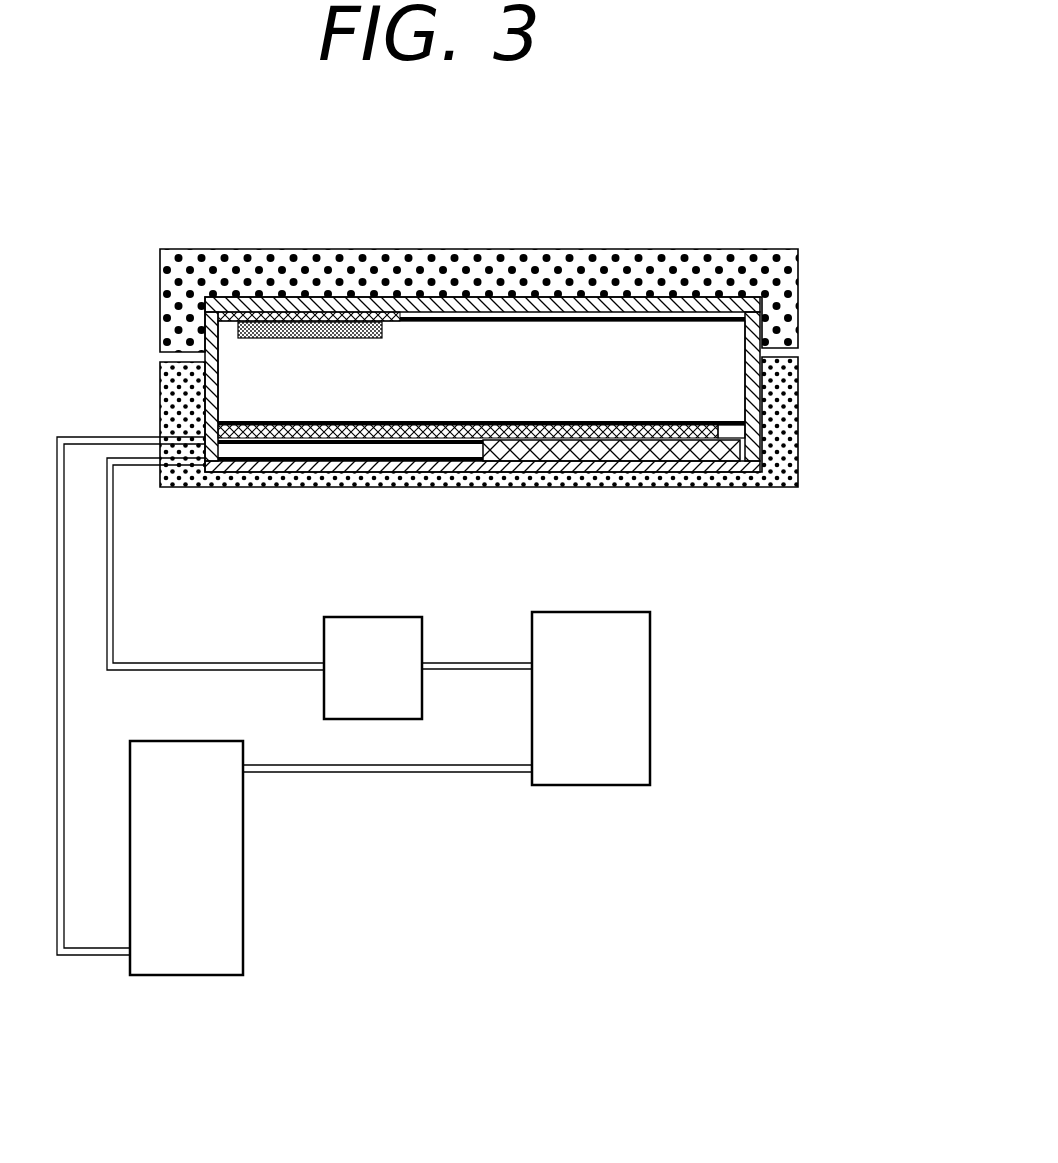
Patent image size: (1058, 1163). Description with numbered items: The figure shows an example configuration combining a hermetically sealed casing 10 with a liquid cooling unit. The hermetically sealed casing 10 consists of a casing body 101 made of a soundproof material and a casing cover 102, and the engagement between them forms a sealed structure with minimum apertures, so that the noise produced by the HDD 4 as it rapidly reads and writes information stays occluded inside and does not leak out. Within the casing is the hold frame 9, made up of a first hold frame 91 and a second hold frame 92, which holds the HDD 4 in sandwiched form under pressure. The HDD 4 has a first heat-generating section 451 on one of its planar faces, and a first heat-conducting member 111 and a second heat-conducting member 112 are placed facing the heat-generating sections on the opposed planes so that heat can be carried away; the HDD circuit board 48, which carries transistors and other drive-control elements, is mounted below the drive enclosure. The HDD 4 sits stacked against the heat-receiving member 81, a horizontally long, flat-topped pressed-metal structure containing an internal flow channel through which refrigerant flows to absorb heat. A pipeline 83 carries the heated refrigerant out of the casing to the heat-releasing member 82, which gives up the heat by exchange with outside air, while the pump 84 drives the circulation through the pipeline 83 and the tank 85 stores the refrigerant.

The HDD 4 is at (605, 333).
The hold frame 9 is at (488, 296).
The hermetically sealed casing 10 is at (270, 272).
The HDD circuit board 48 is at (203, 325).
The heat-receiving member 81 is at (528, 448).
The heat-releasing member 82 is at (200, 890).
The pipeline 83 is at (412, 772).
The pump 84 is at (367, 657).
The tank 85 is at (587, 643).
The first hold frame 91 is at (755, 430).
The second hold frame 92 is at (200, 350).
The casing body 101 is at (790, 388).
The casing cover 102 is at (793, 313).
The first heat-conducting member 111 is at (697, 471).
The second heat-conducting member 112 is at (410, 316).
The first heat-generating section 451 is at (632, 455).